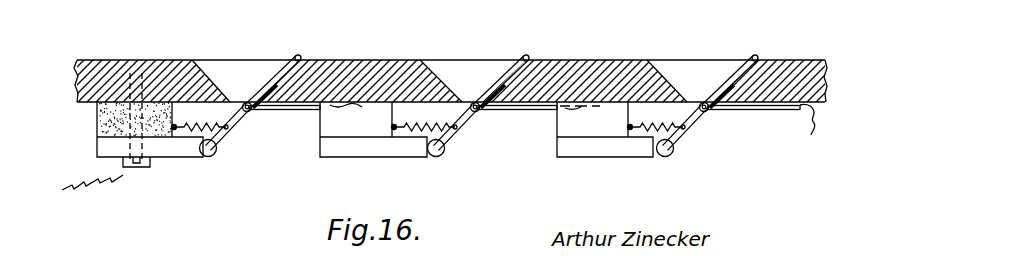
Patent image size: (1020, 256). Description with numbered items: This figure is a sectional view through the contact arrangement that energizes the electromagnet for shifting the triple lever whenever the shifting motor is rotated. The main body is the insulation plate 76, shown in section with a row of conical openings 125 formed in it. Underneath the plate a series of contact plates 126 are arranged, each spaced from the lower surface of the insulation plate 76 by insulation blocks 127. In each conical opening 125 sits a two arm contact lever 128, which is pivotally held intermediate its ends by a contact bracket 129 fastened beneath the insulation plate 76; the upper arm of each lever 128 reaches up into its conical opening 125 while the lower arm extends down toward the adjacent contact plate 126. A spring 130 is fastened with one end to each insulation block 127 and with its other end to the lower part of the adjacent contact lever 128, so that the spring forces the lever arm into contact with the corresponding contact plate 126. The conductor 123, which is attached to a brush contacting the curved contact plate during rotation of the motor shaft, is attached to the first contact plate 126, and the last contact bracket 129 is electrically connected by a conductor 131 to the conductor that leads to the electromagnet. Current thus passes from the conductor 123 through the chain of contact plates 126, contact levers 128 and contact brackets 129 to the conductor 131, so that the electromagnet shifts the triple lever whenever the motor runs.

The insulation plate 76 is at (368, 75).
The conical openings 125 is at (242, 73).
The insulation blocks 127 is at (107, 115).
The contact plates 126 is at (172, 150).
The two arm contact lever 128 is at (240, 122).
The spring 130 is at (197, 135).
The contact bracket 129 is at (287, 109).
The conductor 131 is at (811, 136).
The conductor 123 is at (86, 166).